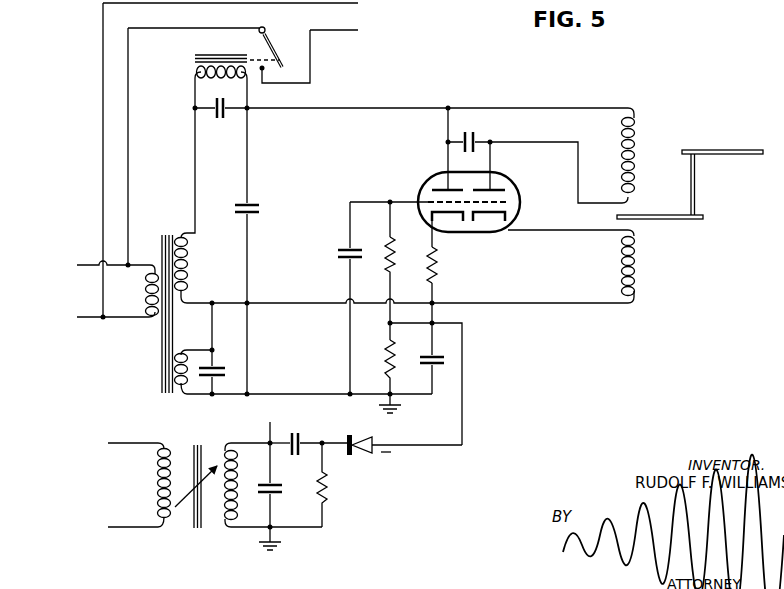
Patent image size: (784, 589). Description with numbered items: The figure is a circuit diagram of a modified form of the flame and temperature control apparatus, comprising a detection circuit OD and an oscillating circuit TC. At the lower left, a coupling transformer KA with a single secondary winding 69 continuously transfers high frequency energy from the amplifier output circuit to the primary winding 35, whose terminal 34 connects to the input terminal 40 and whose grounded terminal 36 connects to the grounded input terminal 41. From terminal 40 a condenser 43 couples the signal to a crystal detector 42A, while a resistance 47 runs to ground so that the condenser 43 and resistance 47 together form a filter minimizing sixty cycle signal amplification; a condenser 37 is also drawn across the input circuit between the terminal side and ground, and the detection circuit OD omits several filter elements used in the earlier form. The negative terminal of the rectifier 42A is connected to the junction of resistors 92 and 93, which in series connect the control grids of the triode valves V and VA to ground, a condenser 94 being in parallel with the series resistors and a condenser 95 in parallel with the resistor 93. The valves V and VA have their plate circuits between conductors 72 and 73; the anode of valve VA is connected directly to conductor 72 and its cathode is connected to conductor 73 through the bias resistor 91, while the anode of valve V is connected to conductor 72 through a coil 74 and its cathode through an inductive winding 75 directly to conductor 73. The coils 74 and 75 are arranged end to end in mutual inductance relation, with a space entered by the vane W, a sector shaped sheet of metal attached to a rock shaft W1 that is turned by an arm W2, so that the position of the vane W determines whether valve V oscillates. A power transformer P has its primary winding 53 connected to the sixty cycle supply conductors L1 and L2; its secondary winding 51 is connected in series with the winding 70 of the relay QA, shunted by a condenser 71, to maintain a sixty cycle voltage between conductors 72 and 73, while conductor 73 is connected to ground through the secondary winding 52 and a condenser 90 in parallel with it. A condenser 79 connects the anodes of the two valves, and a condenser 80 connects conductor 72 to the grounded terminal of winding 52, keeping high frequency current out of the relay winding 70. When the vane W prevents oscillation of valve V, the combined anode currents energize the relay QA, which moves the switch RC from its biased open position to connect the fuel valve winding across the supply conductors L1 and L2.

The relay QA is at (188, 64).
The switch RC is at (266, 30).
The relay winding 70 is at (216, 79).
The condenser 71 is at (219, 121).
The oscillating circuit TC is at (390, 97).
The conductor 72 is at (369, 111).
The condenser 79 is at (471, 131).
The coil 74 is at (622, 170).
The arm W2 is at (718, 150).
The rock shaft W1 is at (696, 195).
The vane W is at (667, 222).
The coil 75 is at (620, 262).
The triode valve VA is at (424, 180).
The oscillating valve V is at (461, 196).
The condenser 94 is at (353, 250).
The resistor 92 is at (393, 248).
The bias resistor 91 is at (434, 260).
The resistor 93 is at (386, 343).
The condenser 95 is at (426, 355).
The condenser 80 is at (260, 208).
The conductor 73 is at (268, 302).
The power transformer P is at (157, 349).
The secondary winding 51 is at (188, 256).
The primary winding 53 is at (145, 298).
The supply conductor L1 is at (87, 263).
The supply conductor L2 is at (88, 318).
The secondary winding 52 is at (192, 357).
The condenser 90 is at (216, 367).
The secondary winding 69 is at (157, 480).
The coupling transformer KA is at (192, 531).
The primary winding 35 is at (239, 470).
The terminal 34 is at (268, 430).
The input terminal 40 is at (279, 442).
The condenser 43 is at (300, 440).
The crystal detector 42A is at (353, 456).
The capacitor 37 is at (279, 486).
The resistance 47 is at (329, 488).
The input terminal 41 is at (286, 526).
The grounded terminal 36 is at (248, 529).
The detection circuit OD is at (299, 531).